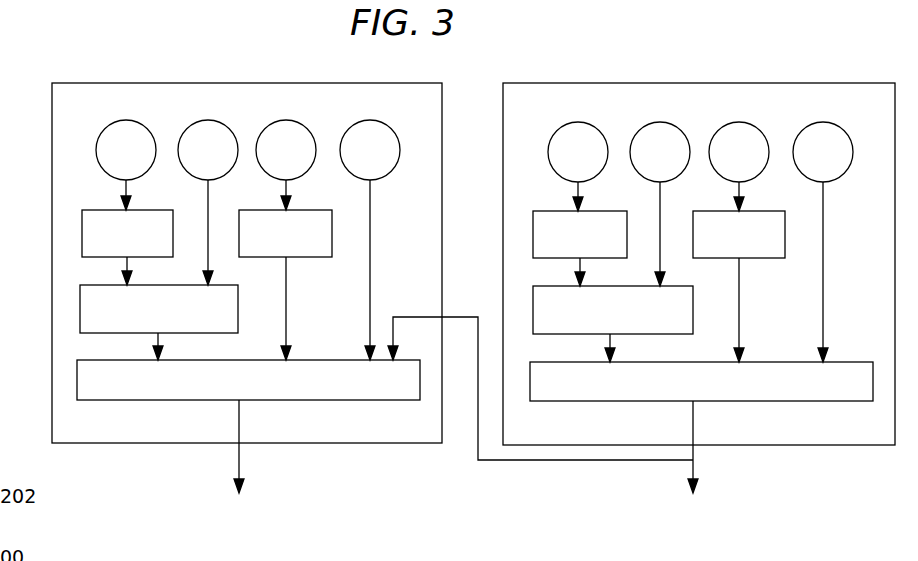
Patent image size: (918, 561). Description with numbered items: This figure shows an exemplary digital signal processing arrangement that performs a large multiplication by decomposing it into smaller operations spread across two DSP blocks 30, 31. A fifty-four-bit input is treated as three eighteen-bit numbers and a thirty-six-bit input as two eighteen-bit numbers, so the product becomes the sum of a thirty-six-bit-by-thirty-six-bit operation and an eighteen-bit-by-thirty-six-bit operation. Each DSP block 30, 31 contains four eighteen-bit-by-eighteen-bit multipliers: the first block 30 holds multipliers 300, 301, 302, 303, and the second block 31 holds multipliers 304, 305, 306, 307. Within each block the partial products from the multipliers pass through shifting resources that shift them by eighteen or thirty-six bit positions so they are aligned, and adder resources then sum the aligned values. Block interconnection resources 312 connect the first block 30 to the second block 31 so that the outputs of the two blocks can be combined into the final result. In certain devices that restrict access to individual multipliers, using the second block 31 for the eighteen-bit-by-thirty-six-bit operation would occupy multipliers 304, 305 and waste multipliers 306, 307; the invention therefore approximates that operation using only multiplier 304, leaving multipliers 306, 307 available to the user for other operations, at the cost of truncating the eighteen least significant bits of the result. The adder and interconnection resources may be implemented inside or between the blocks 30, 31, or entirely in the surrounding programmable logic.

The DSP block 30 is at (153, 83).
The DSP block 31 is at (604, 83).
The multiplier 300 is at (122, 121).
The multiplier 301 is at (205, 121).
The multiplier 302 is at (283, 121).
The multiplier 303 is at (367, 121).
The multiplier 304 is at (574, 123).
The multiplier 305 is at (657, 123).
The multiplier 306 is at (737, 123).
The multiplier 307 is at (820, 123).
The block interconnection resources 312 is at (495, 461).